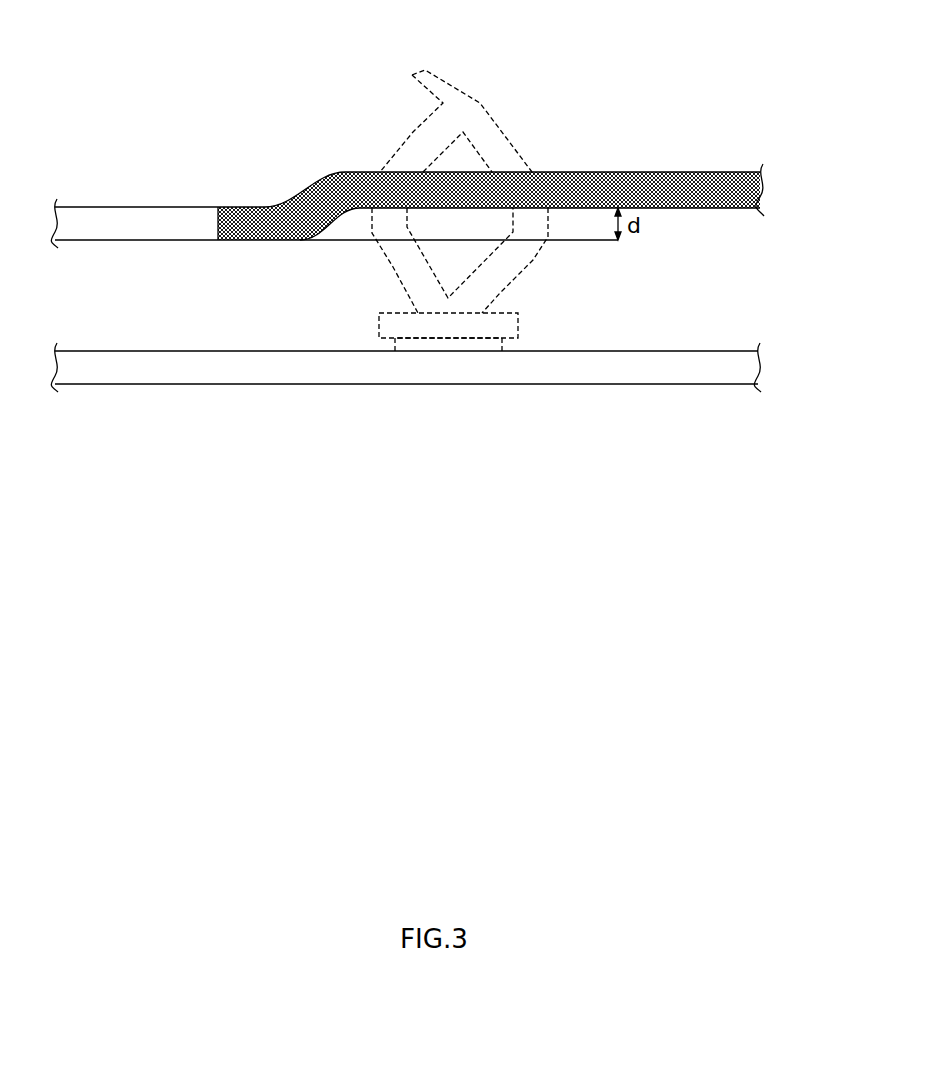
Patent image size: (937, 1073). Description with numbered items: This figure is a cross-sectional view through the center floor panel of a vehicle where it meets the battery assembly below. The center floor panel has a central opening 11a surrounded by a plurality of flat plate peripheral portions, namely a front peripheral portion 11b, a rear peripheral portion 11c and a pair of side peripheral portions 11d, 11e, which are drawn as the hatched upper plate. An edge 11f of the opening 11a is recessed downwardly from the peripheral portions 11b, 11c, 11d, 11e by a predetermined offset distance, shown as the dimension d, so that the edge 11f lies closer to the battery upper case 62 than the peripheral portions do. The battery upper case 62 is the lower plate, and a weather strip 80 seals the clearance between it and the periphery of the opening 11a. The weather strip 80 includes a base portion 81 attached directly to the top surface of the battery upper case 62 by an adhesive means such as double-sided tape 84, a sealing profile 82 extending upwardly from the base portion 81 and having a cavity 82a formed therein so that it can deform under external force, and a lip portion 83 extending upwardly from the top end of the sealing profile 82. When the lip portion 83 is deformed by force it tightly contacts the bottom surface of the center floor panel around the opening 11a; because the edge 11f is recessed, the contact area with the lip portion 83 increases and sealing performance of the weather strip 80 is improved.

The opening 11a is at (140, 225).
The edge of the opening 11f is at (247, 213).
The front peripheral portion 11b is at (591, 162).
The rear peripheral portion 11c is at (591, 162).
The side peripheral portion 11d is at (591, 162).
The side peripheral portion 11e is at (633, 188).
The weather strip 80 is at (480, 230).
The base portion 81 is at (518, 325).
The sealing profile 82 is at (392, 272).
The cavity 82a is at (467, 256).
The lip portion 83 is at (442, 75).
The double-sided tape 84 is at (450, 345).
The battery upper case 62 is at (258, 368).